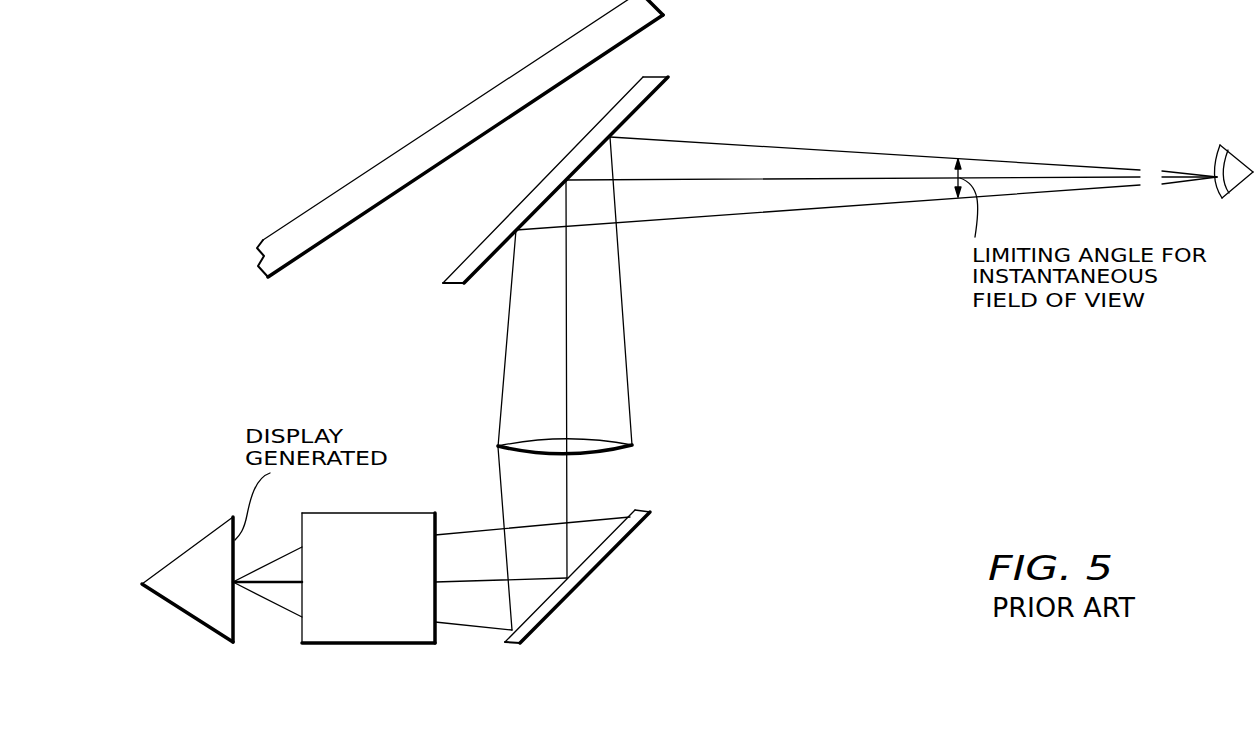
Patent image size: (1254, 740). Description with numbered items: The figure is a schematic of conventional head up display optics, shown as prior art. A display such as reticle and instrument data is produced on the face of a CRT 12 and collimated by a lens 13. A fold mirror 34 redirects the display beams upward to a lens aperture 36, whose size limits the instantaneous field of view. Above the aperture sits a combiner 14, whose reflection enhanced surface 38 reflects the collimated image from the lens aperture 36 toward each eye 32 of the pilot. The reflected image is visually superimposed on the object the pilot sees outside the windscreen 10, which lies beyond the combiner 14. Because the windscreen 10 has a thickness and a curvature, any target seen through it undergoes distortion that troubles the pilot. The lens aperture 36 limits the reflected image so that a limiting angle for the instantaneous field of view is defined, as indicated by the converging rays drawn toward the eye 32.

The windscreen 10 is at (470, 115).
The CRT 12 is at (202, 626).
The lens 13 is at (380, 644).
The combiner 14 is at (456, 270).
The eye 32 is at (1217, 167).
The fold mirror 34 is at (598, 562).
The lens aperture 36 is at (602, 445).
The reflection enhanced surface 38 is at (656, 88).